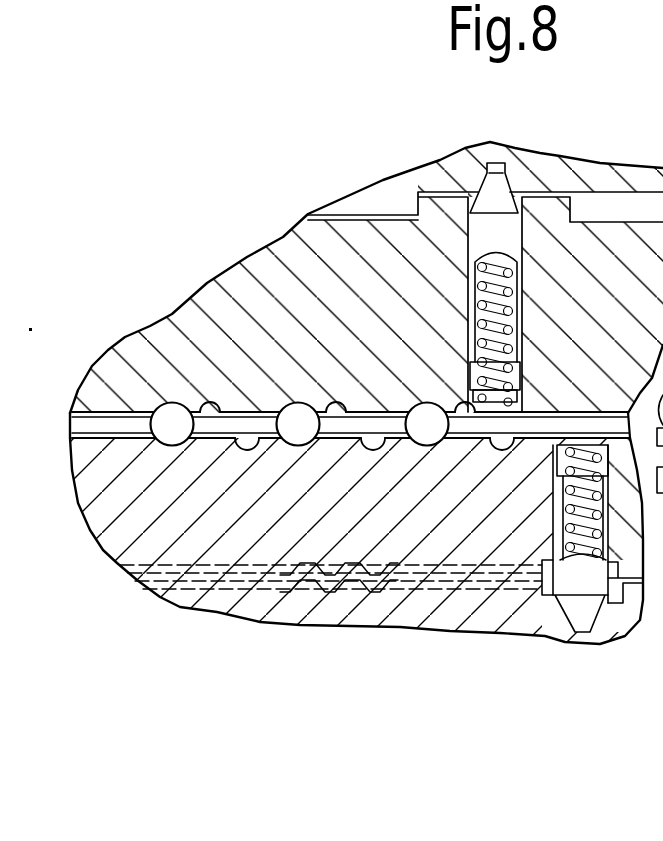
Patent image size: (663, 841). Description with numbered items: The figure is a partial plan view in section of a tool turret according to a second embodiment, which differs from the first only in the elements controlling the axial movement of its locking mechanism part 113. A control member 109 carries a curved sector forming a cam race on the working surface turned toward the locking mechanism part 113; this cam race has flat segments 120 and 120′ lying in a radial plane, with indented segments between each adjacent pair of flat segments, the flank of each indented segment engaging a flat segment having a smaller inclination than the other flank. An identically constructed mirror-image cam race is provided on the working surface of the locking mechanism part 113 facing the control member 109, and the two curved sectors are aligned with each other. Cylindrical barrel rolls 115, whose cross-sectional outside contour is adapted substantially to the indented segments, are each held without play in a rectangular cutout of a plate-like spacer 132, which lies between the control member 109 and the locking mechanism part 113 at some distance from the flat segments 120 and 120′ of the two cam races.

The control member 109 is at (259, 313).
The locking mechanism part 113 is at (320, 547).
The cylindrical barrel roll 115 is at (172, 425).
The flat segment 120 is at (382, 411).
The flat segment 120′ is at (253, 405).
The spacer 132 is at (535, 427).